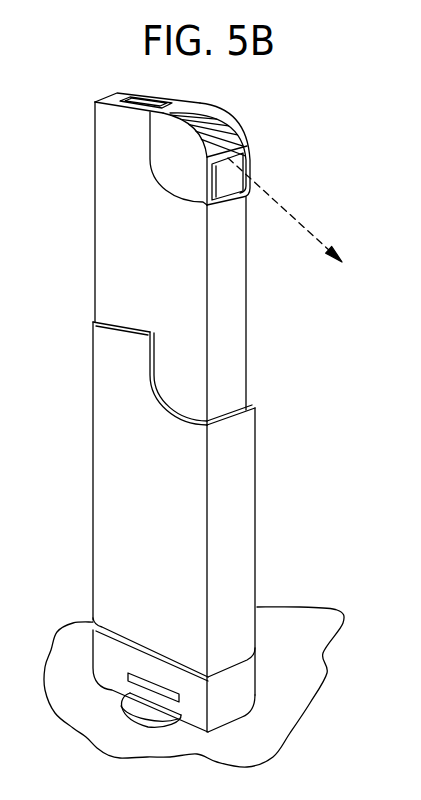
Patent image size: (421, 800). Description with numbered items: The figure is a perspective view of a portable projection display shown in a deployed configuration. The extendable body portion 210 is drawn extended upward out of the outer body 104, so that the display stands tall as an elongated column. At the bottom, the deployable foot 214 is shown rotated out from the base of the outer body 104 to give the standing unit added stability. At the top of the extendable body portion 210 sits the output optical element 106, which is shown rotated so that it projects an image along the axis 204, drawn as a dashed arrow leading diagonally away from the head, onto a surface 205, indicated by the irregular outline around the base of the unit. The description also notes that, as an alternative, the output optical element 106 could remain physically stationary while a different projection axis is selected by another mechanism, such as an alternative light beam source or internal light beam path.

The outer body 104 is at (243, 489).
The output optical element 106 is at (246, 156).
The axis 204 is at (301, 221).
The surface 205 is at (308, 644).
The extendable body portion 210 is at (240, 280).
The deployable foot 214 is at (119, 711).